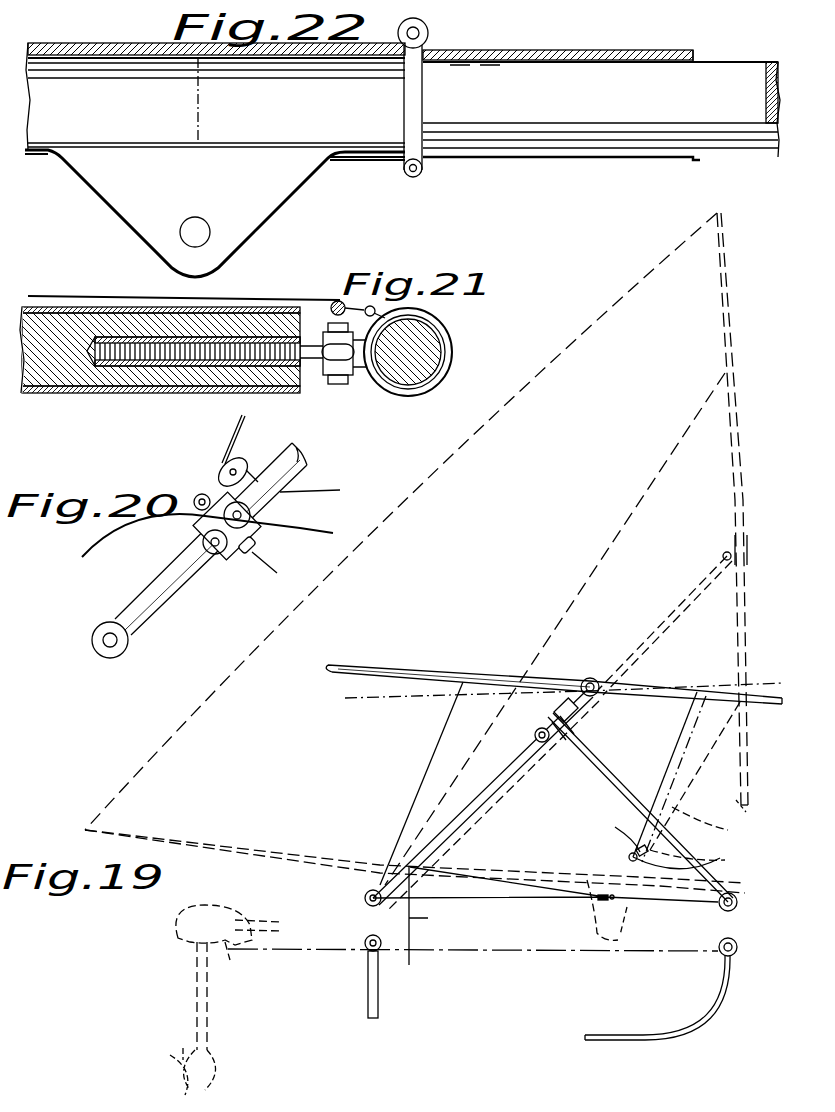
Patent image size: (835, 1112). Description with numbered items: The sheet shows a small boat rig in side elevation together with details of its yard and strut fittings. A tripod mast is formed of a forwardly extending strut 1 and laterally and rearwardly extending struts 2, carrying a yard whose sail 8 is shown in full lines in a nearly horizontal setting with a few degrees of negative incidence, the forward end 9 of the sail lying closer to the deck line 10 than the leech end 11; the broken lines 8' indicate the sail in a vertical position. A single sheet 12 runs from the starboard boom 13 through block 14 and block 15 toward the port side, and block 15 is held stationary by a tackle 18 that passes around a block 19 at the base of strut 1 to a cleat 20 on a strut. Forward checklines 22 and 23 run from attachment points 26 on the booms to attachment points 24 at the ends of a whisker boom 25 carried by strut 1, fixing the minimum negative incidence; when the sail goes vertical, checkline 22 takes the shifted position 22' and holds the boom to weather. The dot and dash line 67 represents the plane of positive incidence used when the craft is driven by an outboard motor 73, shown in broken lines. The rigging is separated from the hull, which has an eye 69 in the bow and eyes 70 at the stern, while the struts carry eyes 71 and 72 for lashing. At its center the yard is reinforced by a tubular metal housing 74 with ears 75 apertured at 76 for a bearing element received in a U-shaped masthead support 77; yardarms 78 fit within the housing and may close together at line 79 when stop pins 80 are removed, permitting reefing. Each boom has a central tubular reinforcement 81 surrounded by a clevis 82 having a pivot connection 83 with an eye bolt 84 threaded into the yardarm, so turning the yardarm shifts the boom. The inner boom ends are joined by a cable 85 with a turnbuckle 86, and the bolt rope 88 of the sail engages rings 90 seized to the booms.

In FIG. 19, the forwardly extending strut 1 is at (620, 798).
In FIG. 20, the laterally and rearwardly extending struts 2 is at (185, 590).
In FIG. 19, the laterally and rearwardly extending struts 2 is at (448, 830).
In FIG. 21, the sail 8 is at (267, 276).
In FIG. 19, the sail 8 is at (554, 669).
In FIG. 19, the sail in vertical position 8' is at (646, 566).
In FIG. 19, the forward end of the sail 9 is at (778, 706).
In FIG. 19, the deck line 10 is at (496, 952).
In FIG. 19, the leech end of the sail 11 is at (328, 667).
In FIG. 19, the sheet 12 is at (600, 543).
In FIG. 21, the starboard boom 13 is at (432, 330).
In FIG. 19, the starboard boom 13 is at (742, 428).
In FIG. 20, the block 14 is at (257, 449).
In FIG. 19, the block 15 is at (600, 900).
In FIG. 20, the tackle 18 is at (122, 538).
In FIG. 19, the tackle 18 is at (442, 915).
In FIG. 19, the block 19 is at (707, 905).
In FIG. 20, the cleat 20 is at (264, 525).
In FIG. 19, the forward checkline 22 is at (656, 777).
In FIG. 19, the shifted checkline position 22' is at (713, 781).
In FIG. 19, the forward checkline 23 is at (620, 937).
In FIG. 19, the attachment points 24 is at (628, 856).
In FIG. 19, the crosstree or whisker boom 25 is at (639, 840).
In FIG. 19, the attachment point on the boom 26 is at (682, 698).
In FIG. 19, the dot and dash line 67 is at (405, 700).
In FIG. 21, the eye in the bow 69 is at (336, 305).
In FIG. 19, the eye in the bow 69 is at (732, 938).
In FIG. 19, the eyes 70 is at (366, 938).
In FIG. 19, the eye 71 is at (738, 890).
In FIG. 19, the eye 72 is at (364, 897).
In FIG. 19, the outboard motor 73 is at (176, 936).
In FIG. 22, the tubular metal housing 74 is at (115, 43).
In FIG. 22, the laterally extending ears 75 is at (272, 221).
In FIG. 22, the aperture 76 is at (190, 217).
In FIG. 19, the U-shaped support 77 is at (574, 720).
In FIG. 22, the yardarms 78 is at (598, 118).
In FIG. 21, the yardarms 78 is at (60, 396).
In FIG. 22, the line 79 is at (200, 106).
In FIG. 22, the stop pins 80 is at (403, 116).
In FIG. 21, the central tubular reinforcement 81 is at (406, 392).
In FIG. 21, the clevis 82 is at (454, 352).
In FIG. 21, the pivot connection 83 is at (338, 380).
In FIG. 21, the eye bolt 84 is at (305, 365).
In FIG. 19, the cable 85 is at (744, 806).
In FIG. 19, the turnbuckle 86 is at (720, 832).
In FIG. 19, the bolt rope 88 is at (715, 861).
In FIG. 21, the rings 90 is at (380, 309).